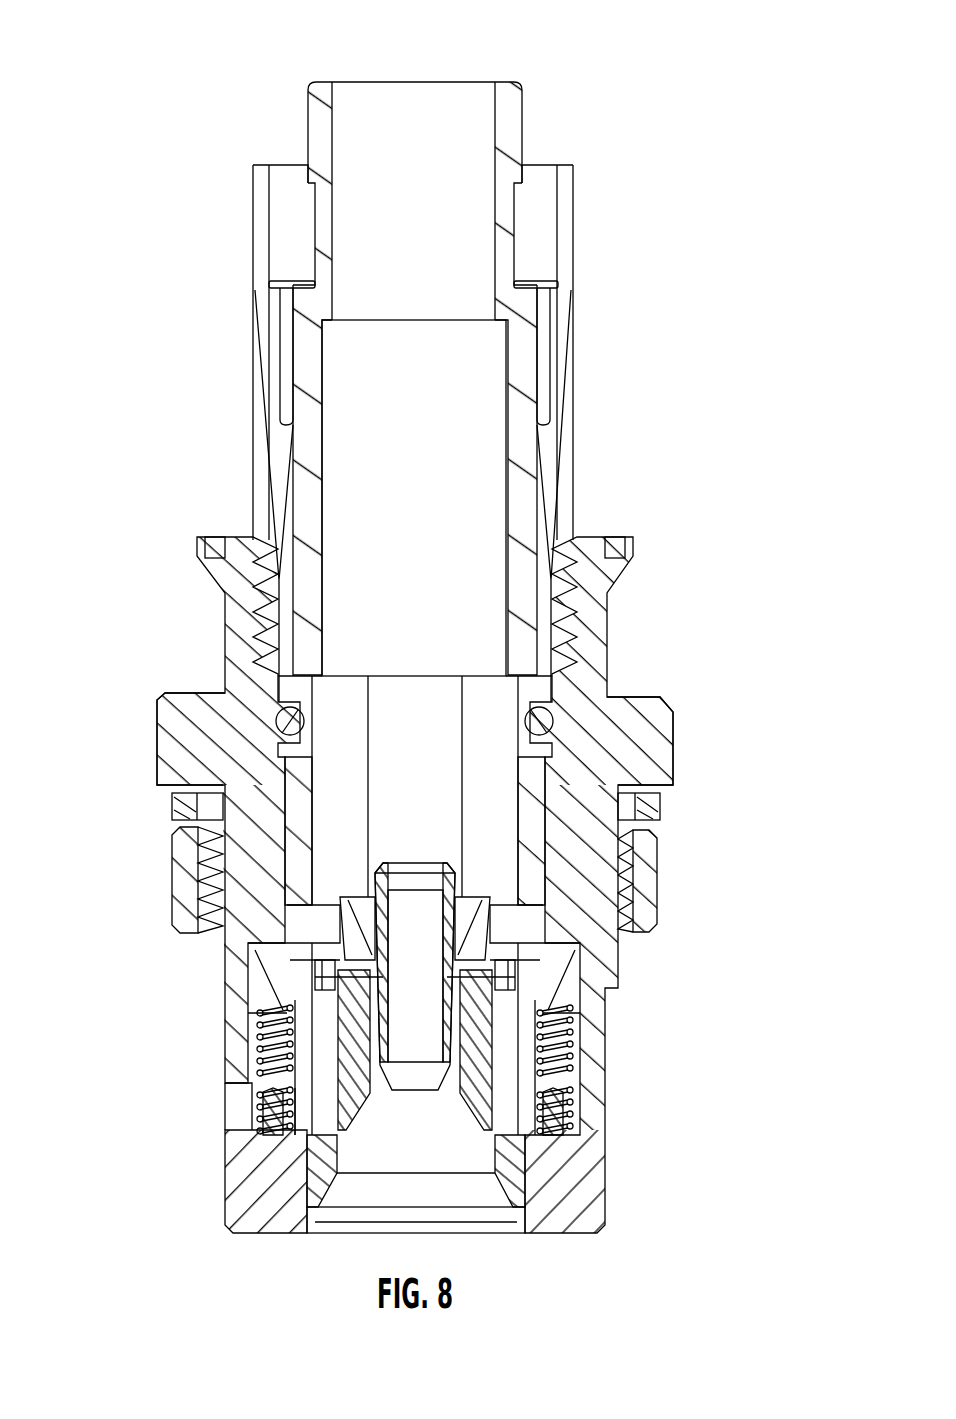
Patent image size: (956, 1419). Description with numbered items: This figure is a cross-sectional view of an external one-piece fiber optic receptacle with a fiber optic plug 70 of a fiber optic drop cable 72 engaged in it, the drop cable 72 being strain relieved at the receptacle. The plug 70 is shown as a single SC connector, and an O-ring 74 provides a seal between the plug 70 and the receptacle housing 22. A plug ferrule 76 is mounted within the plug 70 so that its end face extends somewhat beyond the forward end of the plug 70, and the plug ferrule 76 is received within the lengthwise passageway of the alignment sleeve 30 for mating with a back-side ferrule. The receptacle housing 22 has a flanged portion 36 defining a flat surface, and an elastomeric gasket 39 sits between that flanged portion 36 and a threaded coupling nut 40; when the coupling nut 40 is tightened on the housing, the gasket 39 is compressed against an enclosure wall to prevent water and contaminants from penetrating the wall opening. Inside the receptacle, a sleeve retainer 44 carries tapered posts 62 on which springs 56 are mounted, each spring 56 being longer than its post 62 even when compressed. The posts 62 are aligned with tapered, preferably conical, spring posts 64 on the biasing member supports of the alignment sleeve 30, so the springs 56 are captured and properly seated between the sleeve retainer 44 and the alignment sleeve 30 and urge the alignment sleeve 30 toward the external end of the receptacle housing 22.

The fiber optic drop cable 72 is at (447, 95).
The fiber optic plug 70 is at (565, 300).
The receptacle housing 22 is at (593, 628).
The flanged portion 36 is at (675, 712).
The elastomeric gasket 39 is at (650, 805).
The threaded coupling nut 40 is at (650, 876).
The O-ring 74 is at (278, 702).
The plug ferrule 76 is at (405, 868).
The alignment sleeve 30 is at (507, 1147).
The sleeve retainer 44 is at (595, 1152).
The spring posts 64 is at (263, 1015).
The posts 62 is at (275, 1100).
The springs 56 is at (562, 1042).